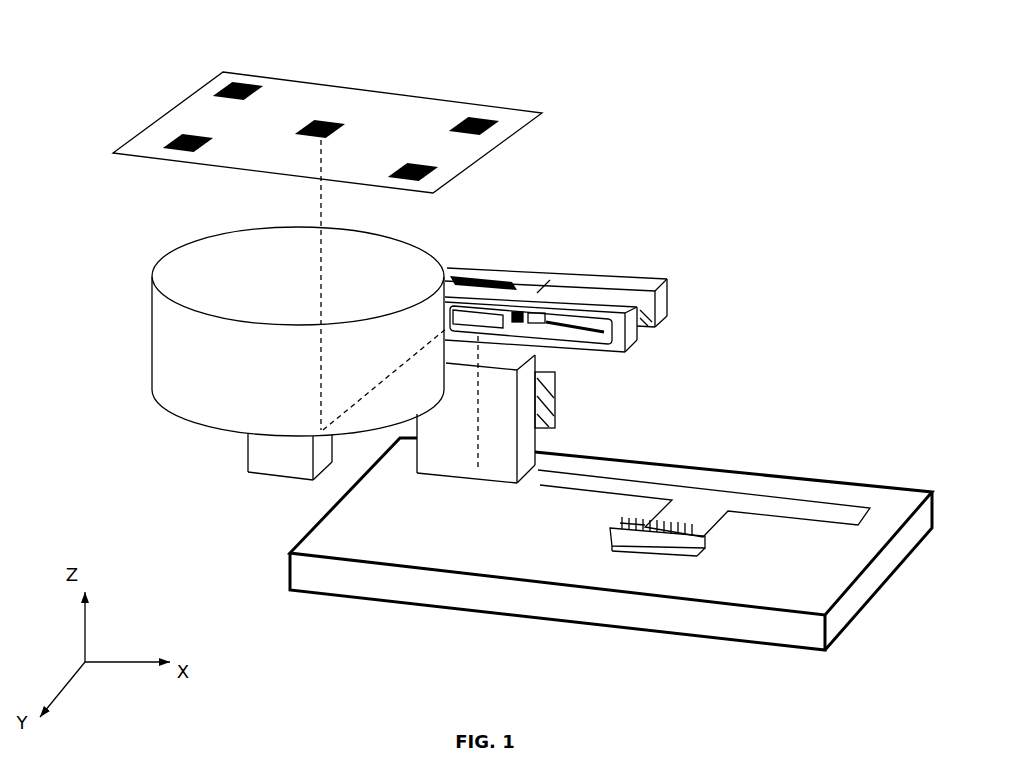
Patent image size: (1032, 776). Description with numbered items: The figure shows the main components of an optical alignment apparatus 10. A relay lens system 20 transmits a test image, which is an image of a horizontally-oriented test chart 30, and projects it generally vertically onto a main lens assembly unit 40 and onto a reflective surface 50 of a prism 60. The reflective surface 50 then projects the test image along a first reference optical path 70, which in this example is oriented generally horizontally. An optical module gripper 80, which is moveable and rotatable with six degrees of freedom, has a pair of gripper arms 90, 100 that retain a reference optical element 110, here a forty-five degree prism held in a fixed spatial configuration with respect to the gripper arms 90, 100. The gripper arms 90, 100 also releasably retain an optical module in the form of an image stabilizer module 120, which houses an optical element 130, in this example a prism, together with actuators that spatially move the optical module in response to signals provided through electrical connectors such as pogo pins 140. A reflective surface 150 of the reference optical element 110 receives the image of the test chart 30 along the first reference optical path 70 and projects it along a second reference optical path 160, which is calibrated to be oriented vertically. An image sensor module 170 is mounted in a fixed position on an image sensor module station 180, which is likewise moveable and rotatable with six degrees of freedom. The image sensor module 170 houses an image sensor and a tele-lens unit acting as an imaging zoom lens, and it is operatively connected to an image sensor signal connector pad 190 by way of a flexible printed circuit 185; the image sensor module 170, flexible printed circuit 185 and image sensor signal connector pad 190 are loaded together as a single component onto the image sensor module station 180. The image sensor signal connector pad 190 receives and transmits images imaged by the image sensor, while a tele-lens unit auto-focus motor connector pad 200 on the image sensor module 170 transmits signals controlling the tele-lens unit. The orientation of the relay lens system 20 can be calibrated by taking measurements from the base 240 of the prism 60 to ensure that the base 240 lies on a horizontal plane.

The optical alignment apparatus 10 is at (748, 128).
The relay lens system 20 is at (76, 457).
The test chart 30 is at (345, 92).
The main lens assembly unit 40 is at (152, 277).
The reflective surface 50 is at (340, 448).
The prism 60 is at (280, 475).
The first reference optical path 70 is at (368, 395).
The optical module gripper 80 is at (758, 304).
The gripper arm 90 is at (642, 345).
The gripper arm 100 is at (632, 272).
The reference optical element 110 is at (505, 283).
The image stabilizer module 120 is at (623, 294).
The optical element 130 is at (588, 329).
The pogo pins 140 is at (668, 309).
The reflective surface 150 is at (522, 320).
The second reference optical path 160 is at (481, 414).
The image sensor module 170 is at (473, 468).
The image sensor module station 180 is at (772, 485).
The flexible printed circuit 185 is at (700, 497).
The image sensor signal connector pad 190 is at (647, 544).
The tele-lens unit auto-focus motor connector pad 200 is at (546, 390).
The base 240 is at (295, 480).